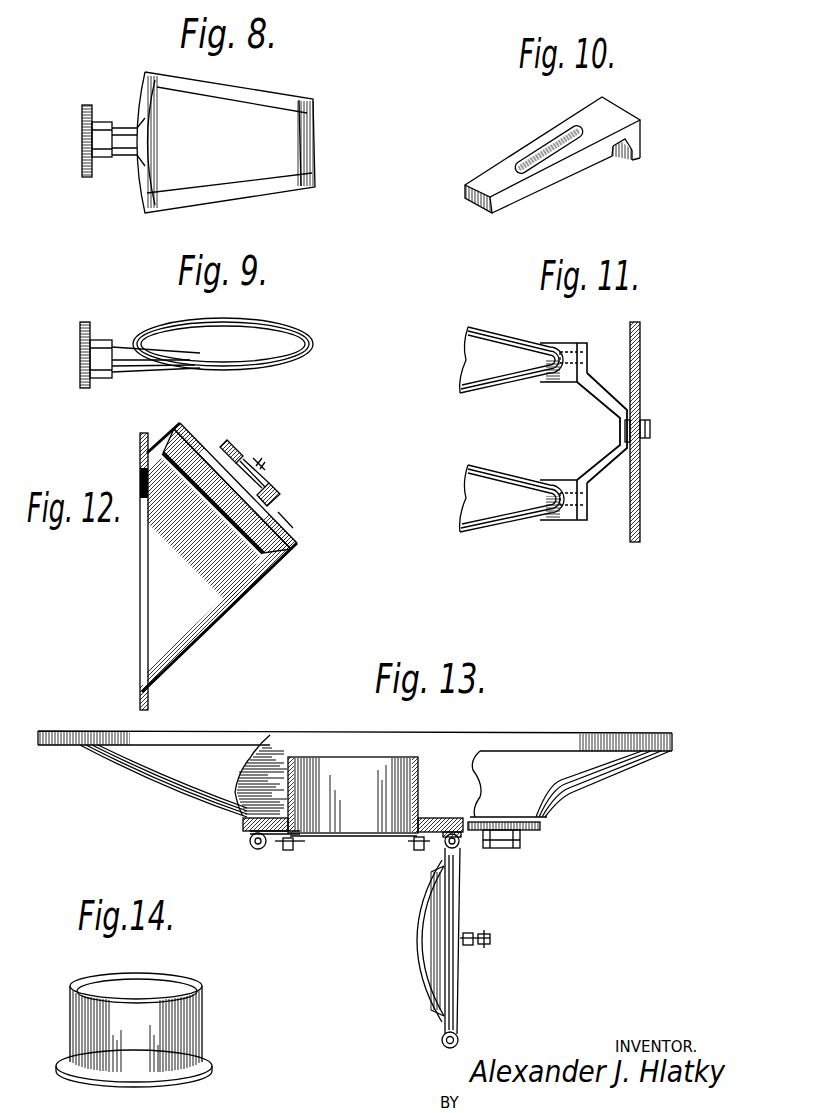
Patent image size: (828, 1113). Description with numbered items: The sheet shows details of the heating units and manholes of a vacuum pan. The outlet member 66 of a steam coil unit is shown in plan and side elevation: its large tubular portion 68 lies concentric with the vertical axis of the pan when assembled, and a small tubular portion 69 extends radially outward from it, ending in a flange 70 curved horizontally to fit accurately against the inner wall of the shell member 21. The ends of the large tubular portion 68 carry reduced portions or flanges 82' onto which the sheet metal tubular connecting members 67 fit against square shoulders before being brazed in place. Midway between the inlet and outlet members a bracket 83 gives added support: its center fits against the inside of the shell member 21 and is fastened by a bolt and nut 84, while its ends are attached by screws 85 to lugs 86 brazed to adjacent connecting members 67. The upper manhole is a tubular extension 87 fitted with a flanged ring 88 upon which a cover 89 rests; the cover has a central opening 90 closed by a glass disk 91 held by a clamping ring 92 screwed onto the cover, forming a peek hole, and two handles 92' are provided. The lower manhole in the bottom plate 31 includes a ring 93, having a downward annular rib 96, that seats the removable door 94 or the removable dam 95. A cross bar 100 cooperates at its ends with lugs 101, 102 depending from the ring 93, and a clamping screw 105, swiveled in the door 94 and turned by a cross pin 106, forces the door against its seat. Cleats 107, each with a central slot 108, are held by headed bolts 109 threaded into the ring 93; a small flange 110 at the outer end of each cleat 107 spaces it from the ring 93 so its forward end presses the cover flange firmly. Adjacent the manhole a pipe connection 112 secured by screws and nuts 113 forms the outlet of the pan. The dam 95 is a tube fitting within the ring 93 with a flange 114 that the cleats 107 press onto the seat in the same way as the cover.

In FIG. 11, the shell member 21 is at (640, 376).
In FIG. 13, the bottom plate 31 is at (183, 793).
In FIG. 8, the outlet member 66 is at (143, 90).
In FIG. 9, the outlet member 66 is at (165, 322).
In FIG. 11, the tubular connecting members 67 is at (512, 322).
In FIG. 8, the large tubular portion 68 is at (273, 167).
In FIG. 9, the large tubular portion 68 is at (288, 318).
In FIG. 8, the small tubular portion 69 is at (108, 158).
In FIG. 9, the small tubular portion 69 is at (102, 342).
In FIG. 8, the flange 70 is at (83, 160).
In FIG. 9, the flange 70 is at (80, 328).
In FIG. 8, the reduced portions or flanges 82' is at (235, 149).
In FIG. 11, the bracket 83 is at (600, 393).
In FIG. 11, the bolt and nut 84 is at (651, 425).
In FIG. 11, the screws 85 is at (587, 357).
In FIG. 11, the lugs 86 is at (563, 347).
In FIG. 12, the tubular extension 87 is at (230, 607).
In FIG. 12, the flanged ring 88 is at (297, 541).
In FIG. 12, the cover 89 is at (278, 512).
In FIG. 12, the central opening 90 is at (280, 486).
In FIG. 12, the glass disk 91 is at (245, 458).
In FIG. 12, the clamping ring 92 is at (240, 432).
In FIG. 12, the handles 92' is at (285, 455).
In FIG. 13, the ring 93 is at (273, 818).
In FIG. 13, the removable door 94 is at (418, 918).
In FIG. 13, the removable dam 95 is at (418, 777).
In FIG. 14, the removable dam 95 is at (200, 1007).
In FIG. 13, the annular rib 96 is at (270, 837).
In FIG. 13, the cross bar 100 is at (463, 967).
In FIG. 13, the lug 101 is at (460, 838).
In FIG. 13, the lug 102 is at (250, 836).
In FIG. 13, the clamping screw 105 is at (467, 932).
In FIG. 13, the cross pin 106 is at (490, 946).
In FIG. 10, the cleat 107 is at (563, 172).
In FIG. 10, the slot 108 is at (545, 148).
In FIG. 13, the headed bolt 109 is at (287, 849).
In FIG. 10, the small flange 110 is at (635, 143).
In FIG. 13, the pipe connection 112 is at (520, 840).
In FIG. 13, the screws and nuts 113 is at (540, 832).
In FIG. 14, the flange 114 is at (212, 1058).